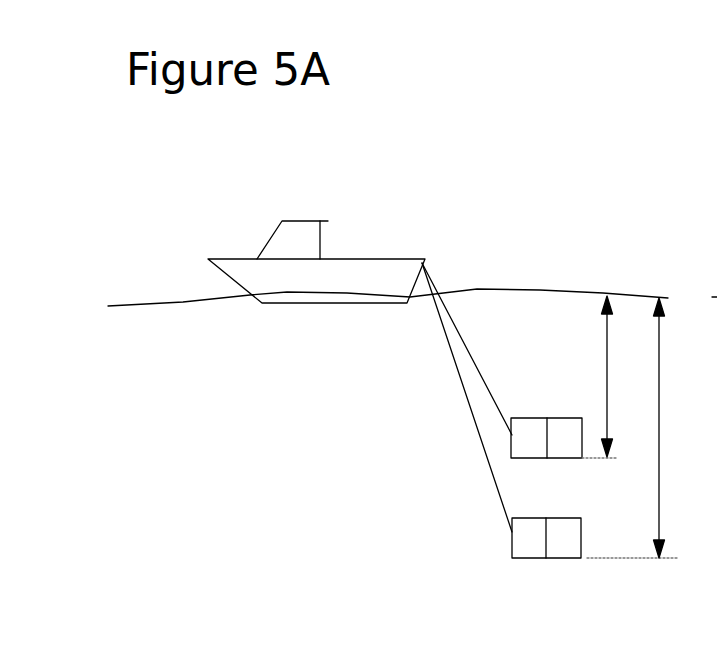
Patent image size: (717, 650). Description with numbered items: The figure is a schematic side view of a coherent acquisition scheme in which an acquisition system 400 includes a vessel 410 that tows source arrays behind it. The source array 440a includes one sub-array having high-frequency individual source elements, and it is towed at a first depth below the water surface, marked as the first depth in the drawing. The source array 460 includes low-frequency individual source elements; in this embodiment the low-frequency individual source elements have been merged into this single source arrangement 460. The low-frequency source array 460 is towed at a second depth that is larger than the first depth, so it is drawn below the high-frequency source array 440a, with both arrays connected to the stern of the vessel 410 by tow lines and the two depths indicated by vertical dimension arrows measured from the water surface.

The acquisition system 400 is at (382, 137).
The vessel 410 is at (320, 242).
The source array 440a is at (521, 418).
The source array 460 is at (531, 518).